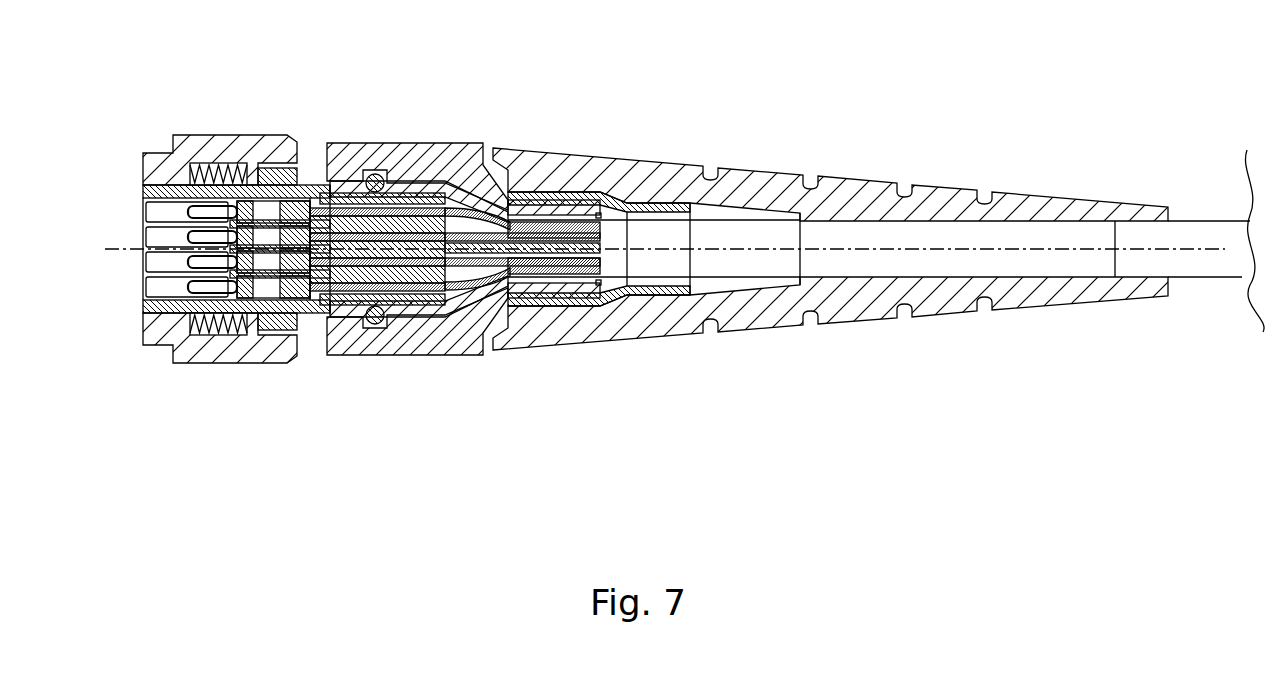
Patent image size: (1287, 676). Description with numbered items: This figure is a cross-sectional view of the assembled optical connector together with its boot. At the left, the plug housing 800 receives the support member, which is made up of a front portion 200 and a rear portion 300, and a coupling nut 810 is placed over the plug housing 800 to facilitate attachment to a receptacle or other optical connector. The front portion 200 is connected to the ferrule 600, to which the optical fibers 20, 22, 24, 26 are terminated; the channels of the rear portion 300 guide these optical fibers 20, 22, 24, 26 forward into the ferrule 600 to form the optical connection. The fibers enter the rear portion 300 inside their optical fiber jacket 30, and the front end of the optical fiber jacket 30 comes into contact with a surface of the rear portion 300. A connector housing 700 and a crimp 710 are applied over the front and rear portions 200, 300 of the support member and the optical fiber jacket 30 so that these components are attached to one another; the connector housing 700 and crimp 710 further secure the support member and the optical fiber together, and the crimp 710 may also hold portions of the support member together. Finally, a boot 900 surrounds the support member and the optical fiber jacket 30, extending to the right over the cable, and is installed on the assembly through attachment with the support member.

The plug housing 800 is at (172, 185).
The coupling nut 810 is at (220, 360).
The front portion 200 is at (297, 185).
The rear portion 300 is at (413, 173).
The ferrule 600 is at (265, 318).
The connector housing 700 is at (467, 313).
The crimp 710 is at (630, 303).
The boot 900 is at (757, 167).
The optical fiber 22 is at (558, 215).
The optical fiber 20 is at (580, 230).
The optical fiber 24 is at (590, 310).
The optical fiber 26 is at (558, 285).
The optical fiber jacket 30 is at (1185, 221).